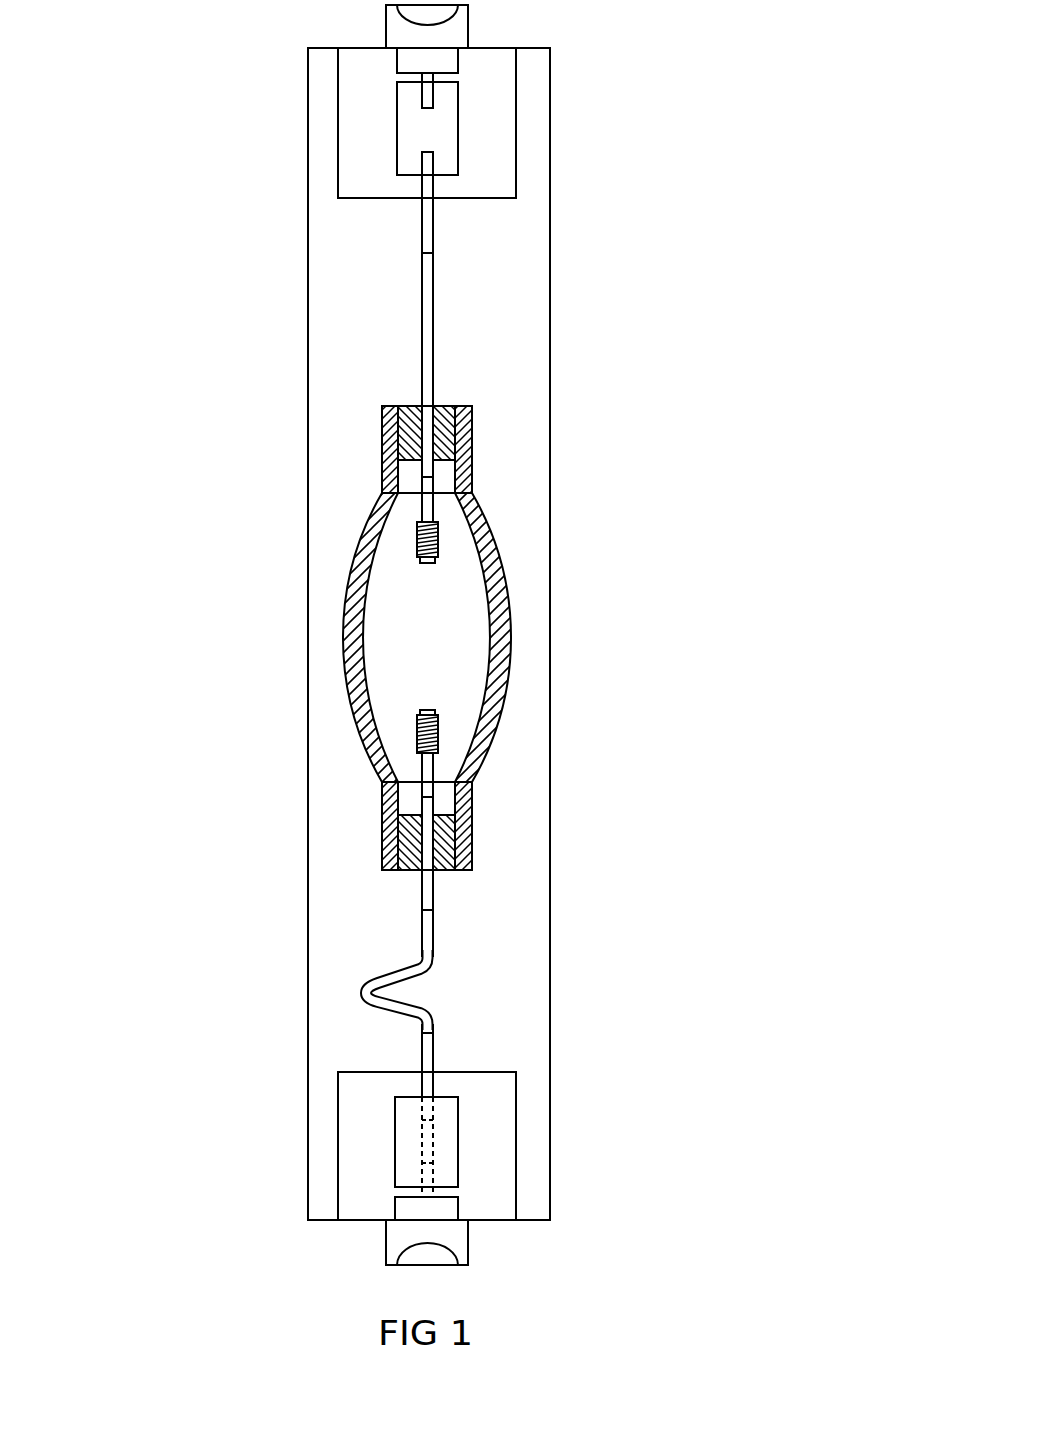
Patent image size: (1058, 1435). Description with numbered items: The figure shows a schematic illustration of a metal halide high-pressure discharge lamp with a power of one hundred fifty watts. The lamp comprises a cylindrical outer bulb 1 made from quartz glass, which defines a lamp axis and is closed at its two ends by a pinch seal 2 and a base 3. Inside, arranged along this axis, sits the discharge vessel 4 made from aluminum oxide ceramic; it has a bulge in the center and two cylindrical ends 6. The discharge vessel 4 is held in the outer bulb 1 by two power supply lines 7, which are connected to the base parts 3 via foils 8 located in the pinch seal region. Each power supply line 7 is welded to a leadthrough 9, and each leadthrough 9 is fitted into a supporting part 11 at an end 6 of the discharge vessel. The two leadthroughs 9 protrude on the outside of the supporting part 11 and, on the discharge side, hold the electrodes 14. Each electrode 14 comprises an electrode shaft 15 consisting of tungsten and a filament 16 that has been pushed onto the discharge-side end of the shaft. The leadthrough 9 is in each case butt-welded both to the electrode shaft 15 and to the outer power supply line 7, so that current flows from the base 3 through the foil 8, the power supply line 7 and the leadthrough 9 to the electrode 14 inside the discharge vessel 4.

The outer bulb 1 is at (614, 692).
The pinch seal 2 is at (550, 198).
The base 3 is at (470, 25).
The discharge vessel 4 is at (343, 657).
The cylindrical end 6 is at (383, 437).
The power supply line 7 is at (422, 231).
The foil 8 is at (397, 130).
The leadthrough 9 is at (430, 355).
The supporting part 11 is at (443, 437).
The electrode 14 is at (460, 548).
The electrode shaft 15 is at (432, 507).
The filament 16 is at (408, 543).